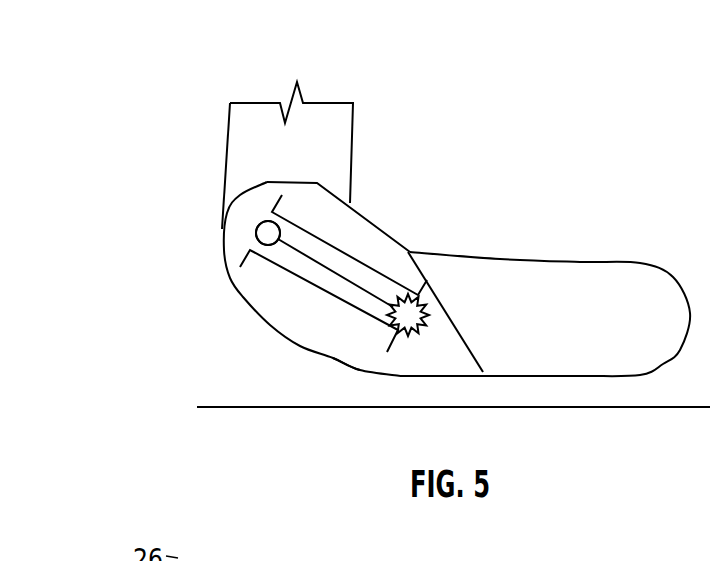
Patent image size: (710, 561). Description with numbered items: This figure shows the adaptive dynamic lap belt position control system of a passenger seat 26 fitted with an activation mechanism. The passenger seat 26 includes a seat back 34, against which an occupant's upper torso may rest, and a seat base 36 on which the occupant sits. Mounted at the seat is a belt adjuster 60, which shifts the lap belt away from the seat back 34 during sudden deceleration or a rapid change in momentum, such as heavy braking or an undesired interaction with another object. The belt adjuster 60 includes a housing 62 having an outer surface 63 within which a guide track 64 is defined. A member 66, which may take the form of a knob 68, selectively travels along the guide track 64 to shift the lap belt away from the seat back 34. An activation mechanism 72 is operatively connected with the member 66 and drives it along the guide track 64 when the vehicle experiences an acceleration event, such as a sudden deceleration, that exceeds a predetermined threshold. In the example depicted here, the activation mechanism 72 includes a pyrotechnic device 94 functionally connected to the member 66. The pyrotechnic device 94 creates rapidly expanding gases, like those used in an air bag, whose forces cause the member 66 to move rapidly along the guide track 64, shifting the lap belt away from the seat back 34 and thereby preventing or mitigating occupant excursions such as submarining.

The passenger seat 26 is at (243, 147).
The seat back 34 is at (237, 150).
The seat base 36 is at (642, 357).
The belt adjuster 60 is at (414, 329).
The housing 62 is at (483, 372).
The outer surface 63 is at (365, 355).
The guide track 64 is at (343, 298).
The member 66 is at (255, 229).
The knob 68 is at (272, 222).
The activation mechanism 72 is at (382, 273).
The pyrotechnic device 94 is at (432, 325).